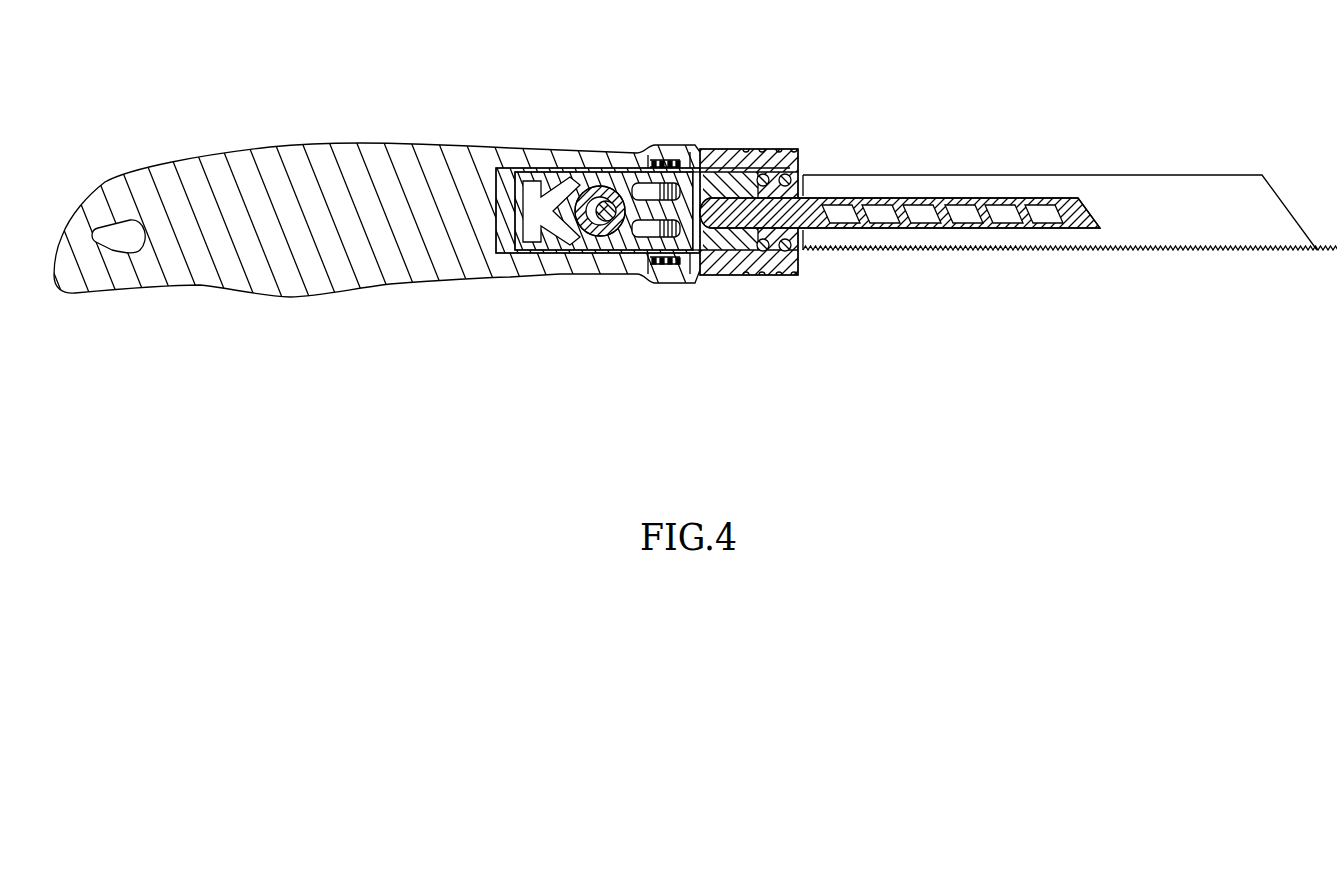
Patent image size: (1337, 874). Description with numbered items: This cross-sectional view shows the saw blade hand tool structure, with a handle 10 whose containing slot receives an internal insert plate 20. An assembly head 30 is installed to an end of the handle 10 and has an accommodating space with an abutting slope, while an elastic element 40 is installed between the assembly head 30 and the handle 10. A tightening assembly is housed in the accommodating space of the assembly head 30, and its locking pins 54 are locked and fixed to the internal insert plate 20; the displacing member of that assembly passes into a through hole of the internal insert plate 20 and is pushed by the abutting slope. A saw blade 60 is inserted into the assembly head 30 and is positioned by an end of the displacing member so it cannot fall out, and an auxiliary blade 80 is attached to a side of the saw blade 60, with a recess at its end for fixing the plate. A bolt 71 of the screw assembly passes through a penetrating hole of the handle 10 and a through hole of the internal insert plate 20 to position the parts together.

The handle 10 is at (327, 257).
The internal insert plate 20 is at (622, 250).
The assembly head 30 is at (727, 152).
The elastic element 40 is at (665, 160).
The locking pins 54 is at (790, 156).
The saw blade 60 is at (1181, 190).
The bolt 71 is at (597, 200).
The auxiliary blade 80 is at (1083, 230).